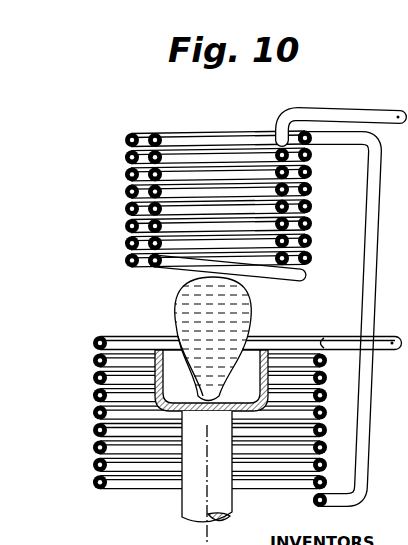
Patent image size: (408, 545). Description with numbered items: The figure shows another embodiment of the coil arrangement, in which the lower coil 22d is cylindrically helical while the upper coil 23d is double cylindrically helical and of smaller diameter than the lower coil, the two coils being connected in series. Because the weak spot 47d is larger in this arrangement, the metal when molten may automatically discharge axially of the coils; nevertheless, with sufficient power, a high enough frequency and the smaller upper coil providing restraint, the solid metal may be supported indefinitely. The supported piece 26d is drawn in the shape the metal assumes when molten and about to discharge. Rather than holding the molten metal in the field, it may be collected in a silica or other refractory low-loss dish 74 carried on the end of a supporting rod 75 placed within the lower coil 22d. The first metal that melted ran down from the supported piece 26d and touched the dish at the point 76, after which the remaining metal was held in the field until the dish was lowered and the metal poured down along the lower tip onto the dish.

The upper coil 23d is at (128, 190).
The lower coil 22d is at (112, 340).
The supported piece 26d is at (195, 297).
The point of contact 76 is at (178, 336).
The refractory low-loss dish 74 is at (273, 349).
The supporting rod 75 is at (182, 498).
The weak spot 47d is at (208, 498).